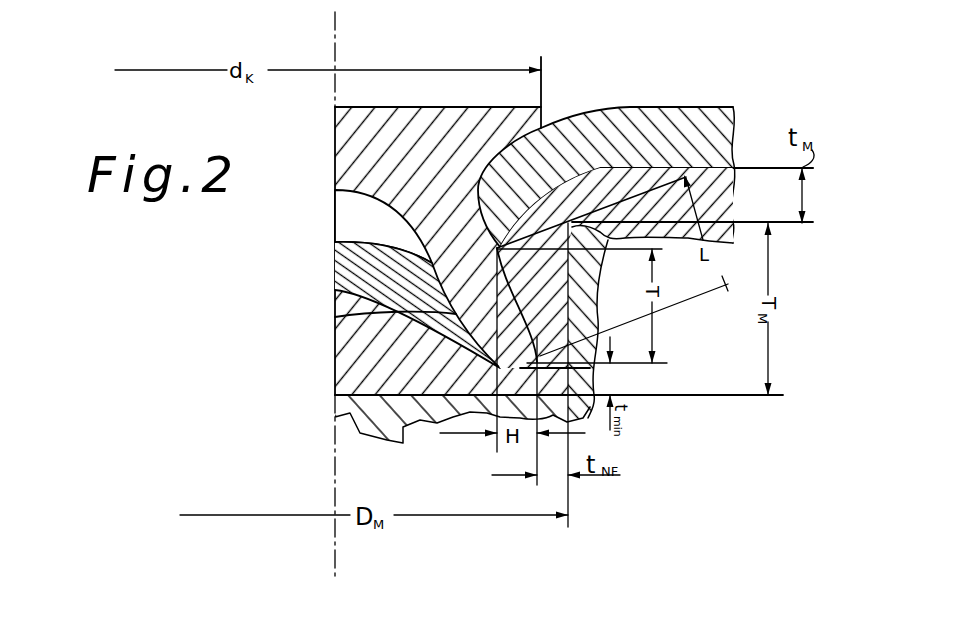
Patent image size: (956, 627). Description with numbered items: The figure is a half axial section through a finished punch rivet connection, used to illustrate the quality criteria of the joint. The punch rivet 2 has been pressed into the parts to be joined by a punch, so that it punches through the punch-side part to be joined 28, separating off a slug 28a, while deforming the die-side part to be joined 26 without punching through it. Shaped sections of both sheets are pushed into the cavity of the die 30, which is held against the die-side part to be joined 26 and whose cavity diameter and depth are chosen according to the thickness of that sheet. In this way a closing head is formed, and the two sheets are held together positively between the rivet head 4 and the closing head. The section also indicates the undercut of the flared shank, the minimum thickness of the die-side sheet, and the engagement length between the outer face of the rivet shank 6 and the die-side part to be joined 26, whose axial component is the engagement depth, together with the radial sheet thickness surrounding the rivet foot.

The punch rivet 2 is at (451, 201).
The rivet head 4 is at (427, 106).
The punch-side part to be joined 28 is at (634, 117).
The slug 28a is at (340, 263).
The die-side part to be joined 26 is at (712, 197).
The rivet shank 6 is at (338, 318).
The die 30 is at (340, 418).